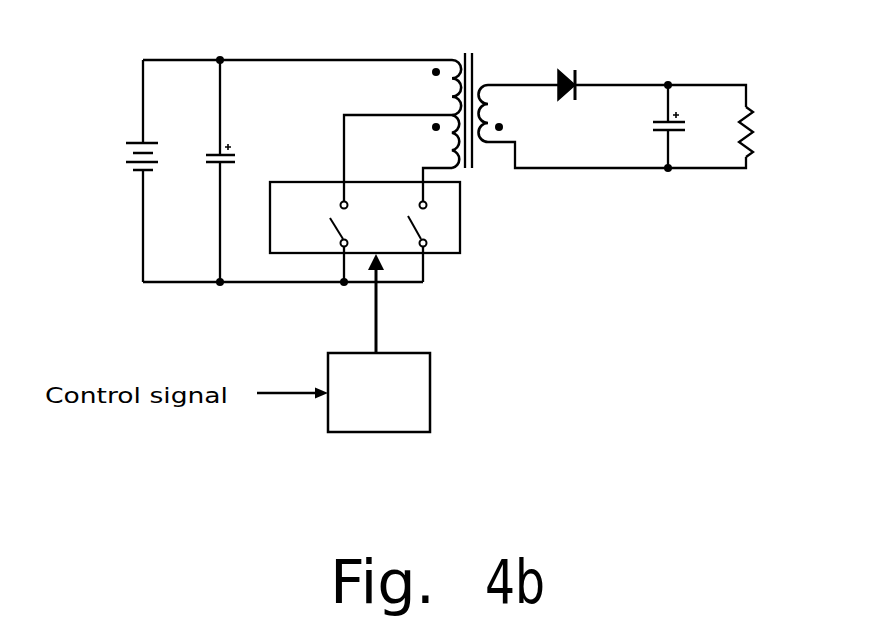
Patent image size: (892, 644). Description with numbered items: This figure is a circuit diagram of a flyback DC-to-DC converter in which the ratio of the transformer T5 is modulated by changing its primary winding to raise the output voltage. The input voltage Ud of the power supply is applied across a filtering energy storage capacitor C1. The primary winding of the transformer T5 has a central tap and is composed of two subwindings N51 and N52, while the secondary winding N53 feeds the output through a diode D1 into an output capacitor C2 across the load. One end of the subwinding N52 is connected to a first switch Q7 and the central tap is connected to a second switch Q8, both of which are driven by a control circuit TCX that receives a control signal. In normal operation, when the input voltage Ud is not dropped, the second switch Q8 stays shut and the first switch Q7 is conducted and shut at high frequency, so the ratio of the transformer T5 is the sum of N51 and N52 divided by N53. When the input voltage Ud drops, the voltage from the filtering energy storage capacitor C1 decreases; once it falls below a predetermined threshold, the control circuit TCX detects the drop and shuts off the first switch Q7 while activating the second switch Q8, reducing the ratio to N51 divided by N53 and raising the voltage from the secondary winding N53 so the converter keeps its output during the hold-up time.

The input voltage Ud is at (153, 147).
The filtering energy storage capacitor C1 is at (231, 171).
The transformer T5 is at (461, 101).
The subwinding N51 is at (434, 87).
The subwinding N52 is at (433, 141).
The secondary winding N53 is at (501, 113).
The diode D1 is at (570, 98).
The output capacitor C2 is at (653, 126).
The first switch Q7 is at (398, 224).
The second switch Q8 is at (319, 224).
The control circuit TCX is at (379, 343).